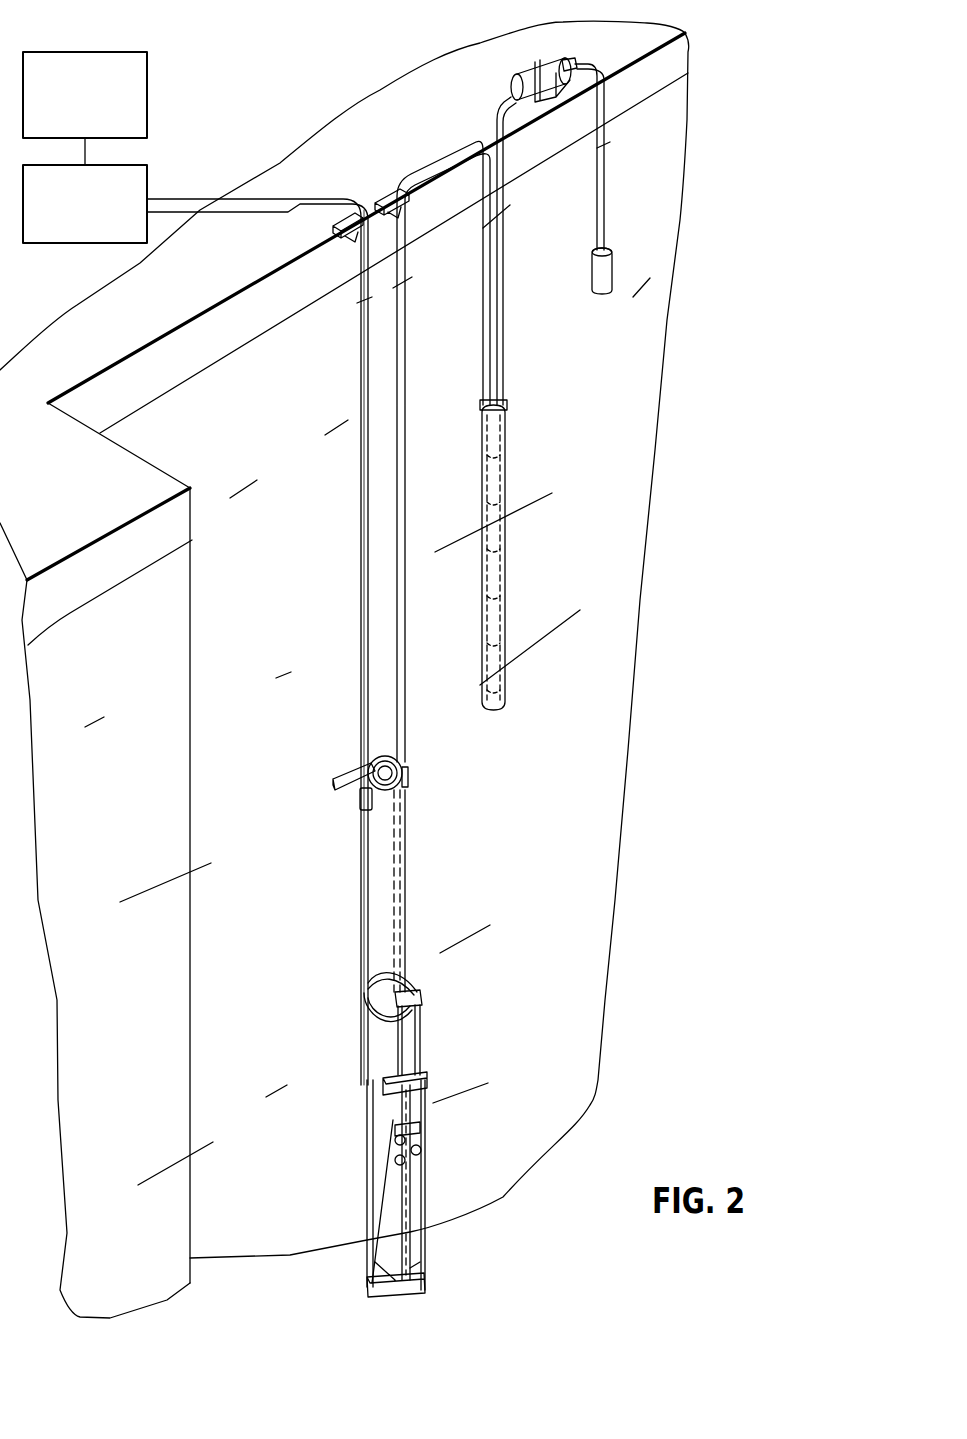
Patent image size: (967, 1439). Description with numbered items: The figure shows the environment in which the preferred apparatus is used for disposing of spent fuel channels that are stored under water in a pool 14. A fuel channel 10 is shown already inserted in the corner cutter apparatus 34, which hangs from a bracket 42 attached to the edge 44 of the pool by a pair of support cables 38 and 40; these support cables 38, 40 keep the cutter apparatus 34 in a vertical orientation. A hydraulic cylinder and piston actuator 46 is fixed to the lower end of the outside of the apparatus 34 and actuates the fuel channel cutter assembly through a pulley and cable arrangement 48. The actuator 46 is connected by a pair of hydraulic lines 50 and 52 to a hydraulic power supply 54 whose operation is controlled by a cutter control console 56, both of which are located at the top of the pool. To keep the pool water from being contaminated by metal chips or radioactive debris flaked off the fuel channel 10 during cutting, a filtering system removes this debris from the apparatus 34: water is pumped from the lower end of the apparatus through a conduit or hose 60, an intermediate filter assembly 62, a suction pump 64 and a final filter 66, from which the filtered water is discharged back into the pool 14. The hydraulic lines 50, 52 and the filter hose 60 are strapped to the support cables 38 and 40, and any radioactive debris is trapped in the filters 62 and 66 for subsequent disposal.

The fuel channel 10 is at (388, 758).
The pool 14 is at (180, 440).
The corner cutter apparatus 34 is at (398, 922).
The support cable 38 is at (372, 560).
The support cable 40 is at (405, 767).
The bracket 42 is at (352, 245).
The edge of the pool 44 is at (195, 318).
The hydraulic cylinder and piston actuator 46 is at (422, 1060).
The pulley and cable arrangement 48 is at (428, 1246).
The hydraulic line 50 is at (373, 980).
The hydraulic line 52 is at (385, 1023).
The hydraulic power supply 54 is at (55, 245).
The cutter control console 56 is at (148, 97).
The conduit or hose 60 is at (400, 540).
The intermediate filter assembly 62 is at (503, 490).
The suction pump 64 is at (530, 62).
The final filter 66 is at (610, 268).